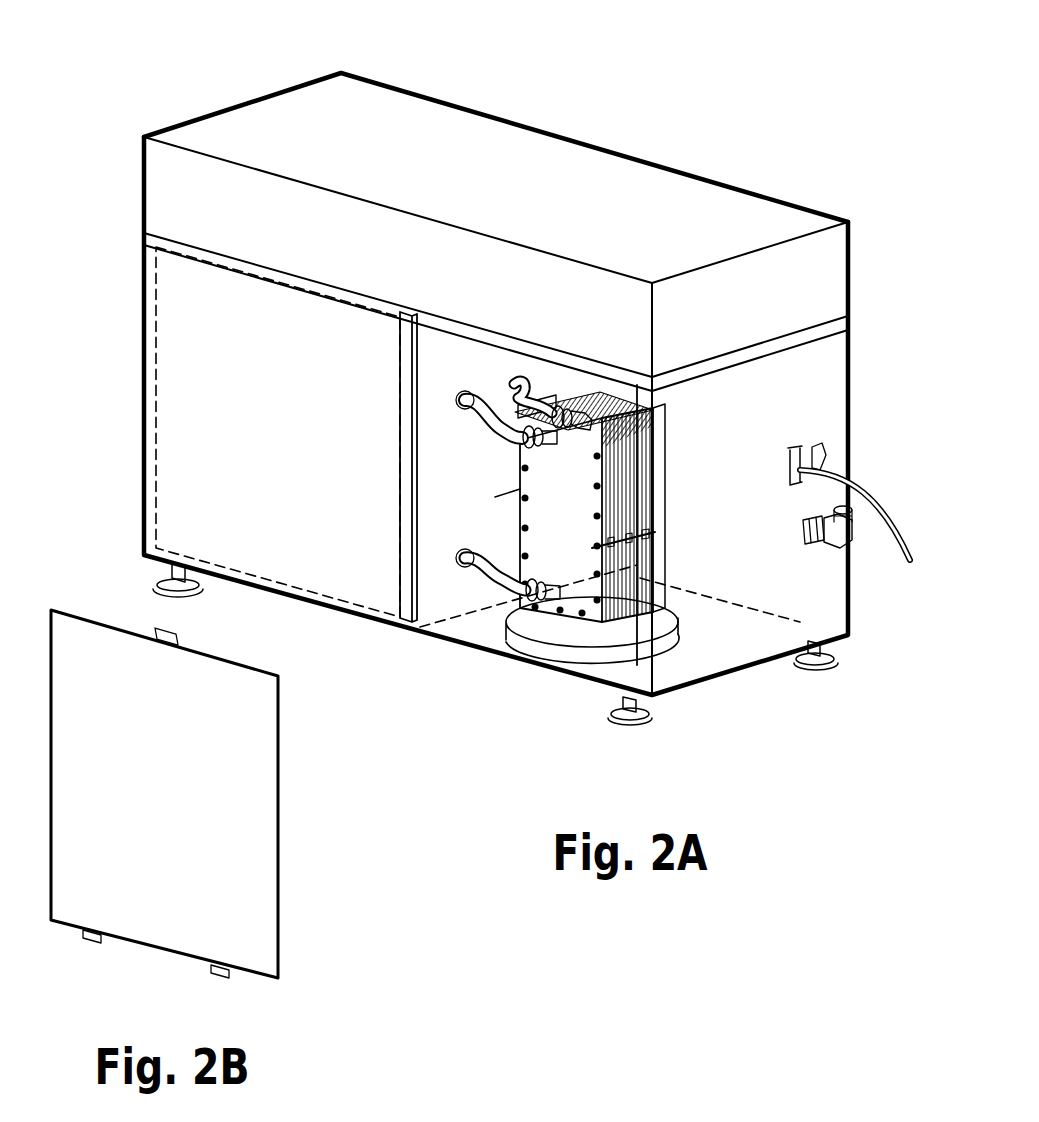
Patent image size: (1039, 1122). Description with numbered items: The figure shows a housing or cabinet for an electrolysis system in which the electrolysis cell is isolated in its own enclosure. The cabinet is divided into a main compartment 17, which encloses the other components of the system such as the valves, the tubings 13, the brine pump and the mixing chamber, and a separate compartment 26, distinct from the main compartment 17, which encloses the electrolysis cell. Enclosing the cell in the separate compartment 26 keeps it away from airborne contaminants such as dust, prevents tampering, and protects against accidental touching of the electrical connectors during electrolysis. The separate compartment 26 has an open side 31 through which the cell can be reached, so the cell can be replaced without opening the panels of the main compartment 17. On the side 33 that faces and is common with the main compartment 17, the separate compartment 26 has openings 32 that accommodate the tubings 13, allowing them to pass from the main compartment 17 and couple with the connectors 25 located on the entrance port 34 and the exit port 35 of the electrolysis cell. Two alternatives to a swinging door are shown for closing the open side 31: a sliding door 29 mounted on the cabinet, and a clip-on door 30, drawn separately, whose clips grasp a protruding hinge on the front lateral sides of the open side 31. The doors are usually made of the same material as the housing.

In FIG. 2A, the main compartment 17 is at (352, 218).
In FIG. 2A, the side 33 is at (440, 417).
In FIG. 2A, the openings 32 is at (470, 393).
In FIG. 2A, the tubings 13 is at (483, 400).
In FIG. 2A, the separate compartment 26 is at (528, 367).
In FIG. 2A, the exit port 35 is at (565, 410).
In FIG. 2A, the sliding door 29 is at (205, 445).
In FIG. 2A, the connectors 25 is at (517, 442).
In FIG. 2A, the open side 31 is at (492, 596).
In FIG. 2A, the entrance port 34 is at (548, 617).
In FIG. 2B, the clip-on door 30 is at (245, 822).